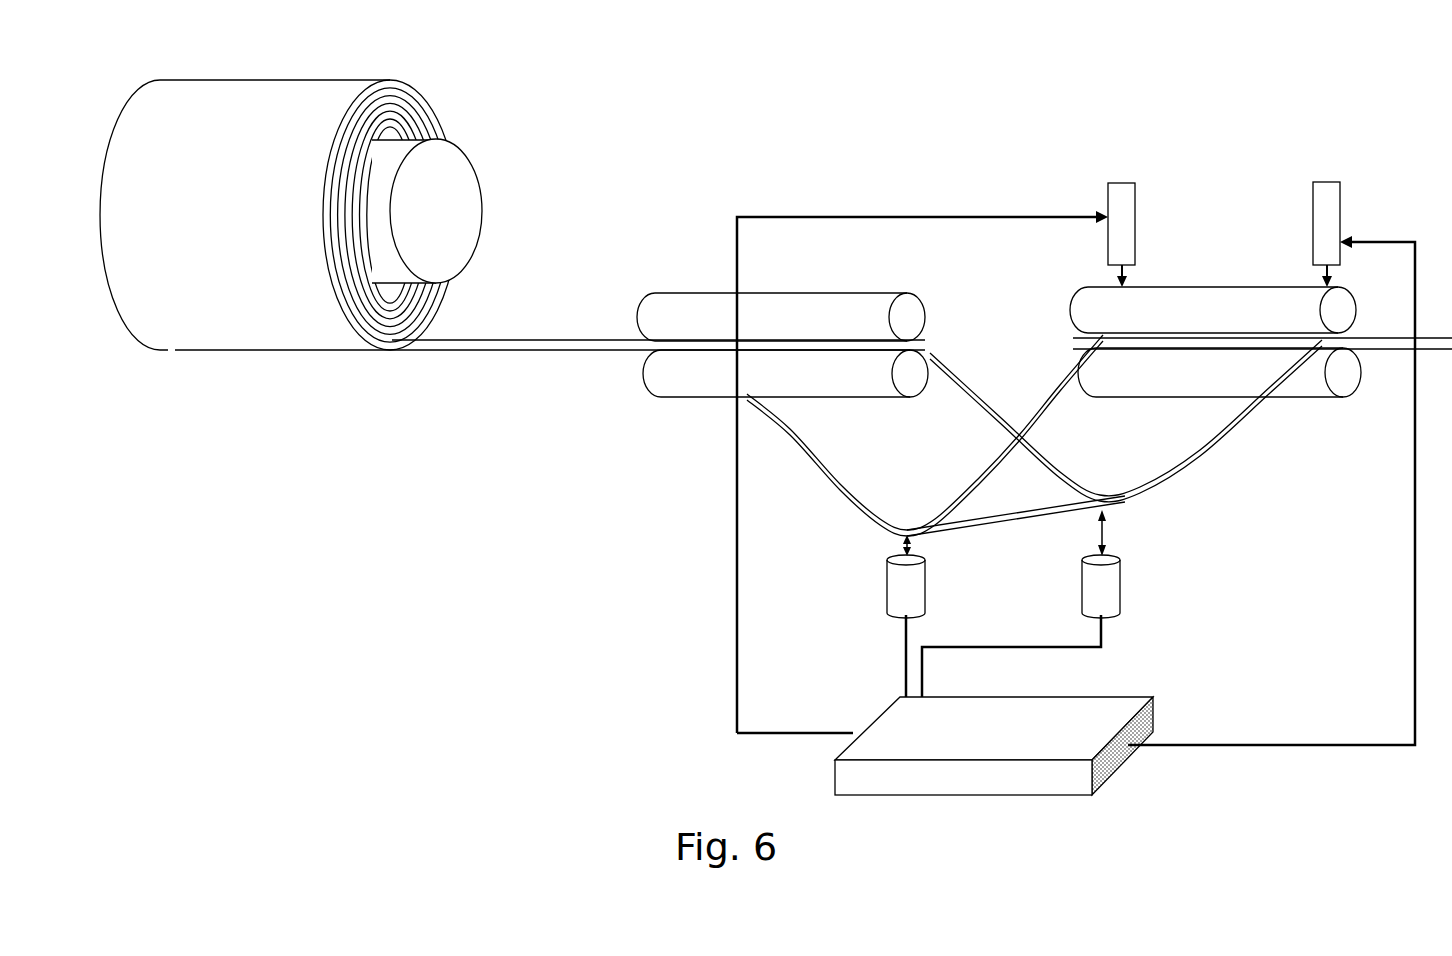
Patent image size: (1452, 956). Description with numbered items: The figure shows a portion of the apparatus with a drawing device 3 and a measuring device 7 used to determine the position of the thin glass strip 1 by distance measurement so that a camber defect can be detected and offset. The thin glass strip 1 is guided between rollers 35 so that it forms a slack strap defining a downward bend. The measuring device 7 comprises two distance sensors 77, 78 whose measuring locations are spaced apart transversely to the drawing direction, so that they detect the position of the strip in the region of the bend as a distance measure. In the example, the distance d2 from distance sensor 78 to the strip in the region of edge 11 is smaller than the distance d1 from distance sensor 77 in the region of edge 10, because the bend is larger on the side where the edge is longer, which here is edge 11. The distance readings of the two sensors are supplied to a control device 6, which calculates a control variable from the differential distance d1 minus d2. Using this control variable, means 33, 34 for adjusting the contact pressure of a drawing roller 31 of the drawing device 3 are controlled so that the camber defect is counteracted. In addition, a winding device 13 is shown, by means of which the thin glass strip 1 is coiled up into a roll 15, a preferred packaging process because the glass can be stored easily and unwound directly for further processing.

The thin glass strip 1 is at (585, 340).
The drawing device 3 is at (1215, 268).
The control device 6 is at (1140, 695).
The measuring device 7 is at (1093, 611).
The edge 10 is at (1233, 430).
The edge 11 is at (1060, 387).
The winding device 13 is at (333, 182).
The roll 15 is at (427, 90).
The drawing roller 31 is at (1218, 287).
The means for adjusting the contact pressure 33 is at (1325, 182).
The means for adjusting the contact pressure 34 is at (1120, 183).
The rollers 35 is at (932, 362).
The distance sensor 77 is at (1120, 587).
The distance sensor 78 is at (887, 593).
The distance d1 is at (1107, 533).
The distance d2 is at (902, 545).